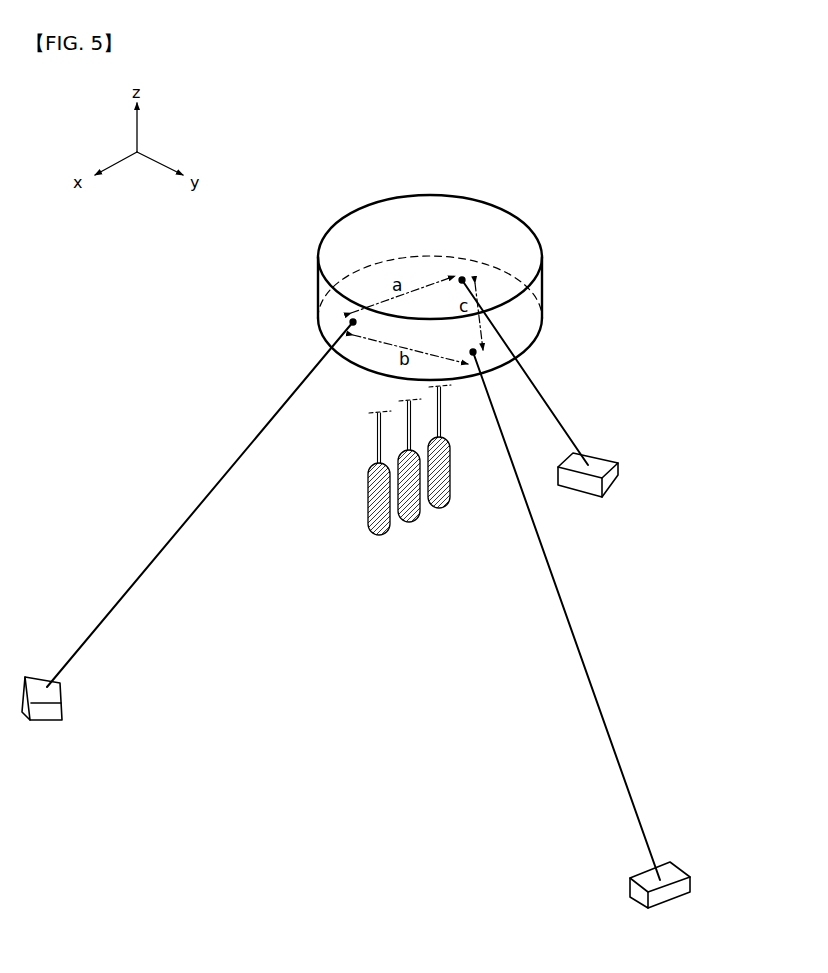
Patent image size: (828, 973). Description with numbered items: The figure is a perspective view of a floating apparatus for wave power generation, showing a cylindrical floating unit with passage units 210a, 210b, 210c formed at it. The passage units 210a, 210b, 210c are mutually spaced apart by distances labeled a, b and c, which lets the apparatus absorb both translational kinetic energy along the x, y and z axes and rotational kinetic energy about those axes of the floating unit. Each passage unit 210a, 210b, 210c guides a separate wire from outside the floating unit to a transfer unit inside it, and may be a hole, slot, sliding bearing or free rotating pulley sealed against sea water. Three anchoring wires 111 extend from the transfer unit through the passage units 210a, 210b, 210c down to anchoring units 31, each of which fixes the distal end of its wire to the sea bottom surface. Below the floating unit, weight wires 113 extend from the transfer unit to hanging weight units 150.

The anchoring unit 31 is at (53, 692).
The anchoring wire 111 is at (238, 458).
The weight wire 113 is at (440, 420).
The weight unit 150 is at (392, 530).
The passage unit 210a is at (353, 322).
The passage unit 210b is at (473, 352).
The passage unit 210c is at (462, 280).